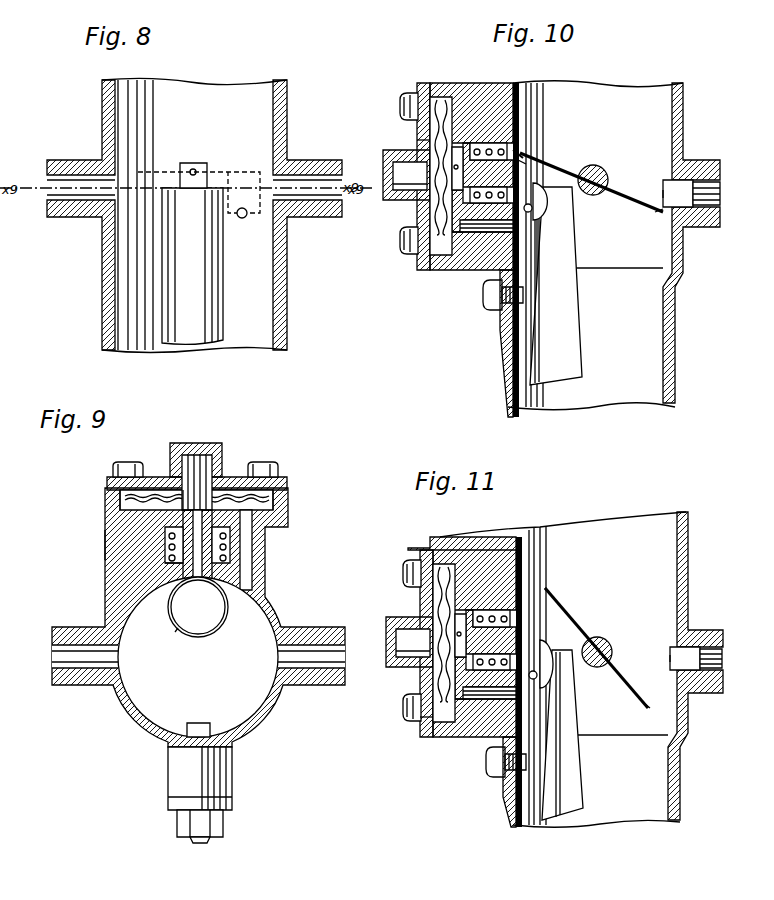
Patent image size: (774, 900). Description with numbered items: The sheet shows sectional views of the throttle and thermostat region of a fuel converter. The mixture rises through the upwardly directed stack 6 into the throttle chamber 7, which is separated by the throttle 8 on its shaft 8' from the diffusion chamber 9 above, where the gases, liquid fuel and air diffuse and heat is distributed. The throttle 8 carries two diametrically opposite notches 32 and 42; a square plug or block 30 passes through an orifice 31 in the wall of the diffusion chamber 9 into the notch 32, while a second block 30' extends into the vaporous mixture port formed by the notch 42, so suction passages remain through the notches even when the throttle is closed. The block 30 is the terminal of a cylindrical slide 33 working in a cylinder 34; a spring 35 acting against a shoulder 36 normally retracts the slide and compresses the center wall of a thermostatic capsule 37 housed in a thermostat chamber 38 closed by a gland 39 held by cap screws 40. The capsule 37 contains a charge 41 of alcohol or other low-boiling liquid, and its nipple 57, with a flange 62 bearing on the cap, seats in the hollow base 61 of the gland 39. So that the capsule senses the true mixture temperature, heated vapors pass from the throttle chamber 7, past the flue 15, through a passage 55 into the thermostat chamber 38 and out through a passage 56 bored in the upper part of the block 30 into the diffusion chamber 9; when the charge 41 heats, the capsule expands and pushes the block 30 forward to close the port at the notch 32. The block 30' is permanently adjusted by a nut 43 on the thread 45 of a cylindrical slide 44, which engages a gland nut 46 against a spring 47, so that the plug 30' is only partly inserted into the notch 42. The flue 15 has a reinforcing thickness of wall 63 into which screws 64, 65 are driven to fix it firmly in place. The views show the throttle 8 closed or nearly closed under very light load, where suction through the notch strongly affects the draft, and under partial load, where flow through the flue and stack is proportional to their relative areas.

In FIG. 10, the stack 6 is at (614, 308).
In FIG. 11, the stack 6 is at (618, 748).
In FIG. 8, the throttle chamber 7 is at (205, 266).
In FIG. 9, the throttle chamber 7 is at (198, 617).
In FIG. 10, the throttle chamber 7 is at (617, 241).
In FIG. 11, the throttle chamber 7 is at (623, 712).
In FIG. 10, the throttle 8 is at (591, 182).
In FIG. 11, the throttle 8 is at (596, 648).
In FIG. 10, the throttle shaft 8' is at (596, 168).
In FIG. 11, the throttle shaft 8' is at (606, 645).
In FIG. 8, the diffusion chamber 9 is at (186, 215).
In FIG. 10, the diffusion chamber 9 is at (616, 244).
In FIG. 11, the diffusion chamber 9 is at (581, 668).
In FIG. 9, the flue 15 is at (176, 630).
In FIG. 10, the flue 15 is at (556, 286).
In FIG. 11, the flue 15 is at (578, 793).
In FIG. 8, the plug or block 30 is at (199, 182).
In FIG. 9, the plug or block 30 is at (198, 657).
In FIG. 10, the plug or block 30 is at (548, 201).
In FIG. 11, the plug or block 30 is at (556, 664).
In FIG. 9, the block 30' is at (207, 719).
In FIG. 10, the block 30' is at (653, 174).
In FIG. 11, the block 30' is at (652, 659).
In FIG. 10, the orifice 31 is at (521, 155).
In FIG. 10, the notch 32 is at (523, 160).
In FIG. 11, the notch 32 is at (550, 590).
In FIG. 9, the cylindrical slide 33 is at (168, 546).
In FIG. 10, the cylindrical slide 33 is at (432, 212).
In FIG. 11, the cylindrical slide 33 is at (435, 690).
In FIG. 9, the cylinder 34 is at (168, 564).
In FIG. 10, the cylinder 34 is at (487, 143).
In FIG. 11, the cylinder 34 is at (500, 612).
In FIG. 9, the spring 35 is at (168, 556).
In FIG. 10, the spring 35 is at (500, 143).
In FIG. 11, the spring 35 is at (490, 612).
In FIG. 9, the shoulder 36 is at (165, 533).
In FIG. 10, the shoulder 36 is at (462, 140).
In FIG. 11, the shoulder 36 is at (478, 610).
In FIG. 9, the thermostatic capsule 37 is at (272, 506).
In FIG. 10, the thermostatic capsule 37 is at (442, 255).
In FIG. 11, the thermostatic capsule 37 is at (440, 564).
In FIG. 9, the thermostat chamber 38 is at (274, 497).
In FIG. 10, the thermostat chamber 38 is at (410, 258).
In FIG. 11, the thermostat chamber 38 is at (425, 605).
In FIG. 9, the gland 39 is at (268, 470).
In FIG. 10, the gland 39 is at (418, 132).
In FIG. 11, the gland 39 is at (430, 683).
In FIG. 9, the cap screws 40 is at (128, 463).
In FIG. 10, the cap screws 40 is at (400, 100).
In FIG. 9, the charge 41 is at (120, 506).
In FIG. 10, the charge 41 is at (430, 143).
In FIG. 11, the charge 41 is at (430, 722).
In FIG. 10, the notch 42 is at (655, 216).
In FIG. 11, the notch 42 is at (640, 706).
In FIG. 9, the nut 43 is at (177, 828).
In FIG. 10, the cylindrical slide 44 is at (710, 192).
In FIG. 11, the cylindrical slide 44 is at (712, 658).
In FIG. 9, the thread 45 is at (210, 843).
In FIG. 9, the gland nut 46 is at (232, 807).
In FIG. 10, the spring 47 is at (716, 206).
In FIG. 11, the spring 47 is at (722, 668).
In FIG. 8, the passage 55 is at (243, 208).
In FIG. 9, the passage 55 is at (252, 572).
In FIG. 10, the passage 55 is at (533, 208).
In FIG. 11, the passage 55 is at (538, 678).
In FIG. 8, the passage 56 is at (193, 169).
In FIG. 9, the passage 56 is at (206, 500).
In FIG. 10, the passage 56 is at (452, 170).
In FIG. 11, the passage 56 is at (470, 635).
In FIG. 9, the nipple 57 is at (200, 455).
In FIG. 10, the nipple 57 is at (410, 176).
In FIG. 11, the nipple 57 is at (413, 643).
In FIG. 9, the hollow base 61 is at (213, 500).
In FIG. 10, the hollow base 61 is at (383, 200).
In FIG. 11, the hollow base 61 is at (386, 628).
In FIG. 9, the flange 62 is at (176, 470).
In FIG. 11, the flange 62 is at (400, 707).
In FIG. 10, the reinforcing thickness of wall 63 is at (522, 250).
In FIG. 11, the reinforcing thickness of wall 63 is at (528, 722).
In FIG. 10, the screw 64 is at (518, 228).
In FIG. 11, the screw 64 is at (478, 700).
In FIG. 10, the screw 65 is at (510, 297).
In FIG. 11, the screw 65 is at (487, 762).